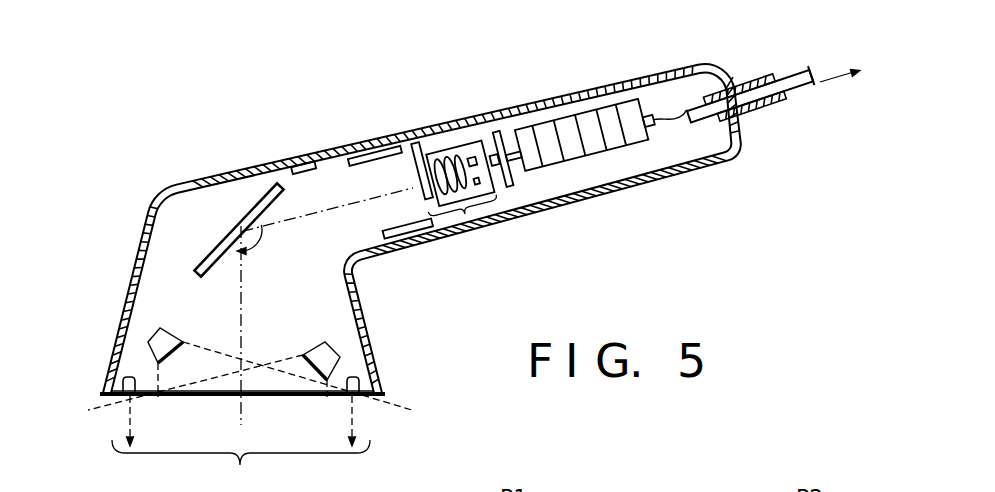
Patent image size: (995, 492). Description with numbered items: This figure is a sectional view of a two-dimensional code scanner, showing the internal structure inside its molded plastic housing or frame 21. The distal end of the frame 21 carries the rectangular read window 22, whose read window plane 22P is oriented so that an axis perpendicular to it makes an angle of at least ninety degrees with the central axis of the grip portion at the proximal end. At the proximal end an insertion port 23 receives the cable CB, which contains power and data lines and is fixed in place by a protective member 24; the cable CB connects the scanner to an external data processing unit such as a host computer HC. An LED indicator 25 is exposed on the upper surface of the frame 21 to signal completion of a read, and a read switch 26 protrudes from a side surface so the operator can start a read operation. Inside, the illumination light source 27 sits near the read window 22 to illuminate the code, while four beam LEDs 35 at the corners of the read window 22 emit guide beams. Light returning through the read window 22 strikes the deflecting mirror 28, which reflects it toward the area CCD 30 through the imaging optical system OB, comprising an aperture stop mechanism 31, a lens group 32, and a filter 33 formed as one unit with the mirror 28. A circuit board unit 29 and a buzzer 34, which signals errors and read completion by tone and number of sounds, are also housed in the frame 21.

The housing or frame 21 is at (522, 103).
The 2-dimensional code read window 22 is at (255, 404).
The read window plane 22P is at (340, 383).
The insertion port 23 is at (742, 118).
The protective member 24 is at (746, 78).
The LED indicator 25 is at (306, 162).
The read switch 26 is at (372, 158).
The illumination light source 27 is at (310, 352).
The deflecting mirror 28 is at (219, 247).
The circuit board unit 29 is at (637, 146).
The area CCD 30 is at (518, 180).
The aperture stop mechanism 31 is at (492, 184).
The lens group 32 is at (452, 150).
The filter 33 is at (413, 148).
The buzzer 34 is at (392, 240).
The beam LEDs 35 is at (342, 396).
The cable CB is at (789, 76).
The host computer HC is at (858, 68).
The imaging optical system OB is at (465, 214).